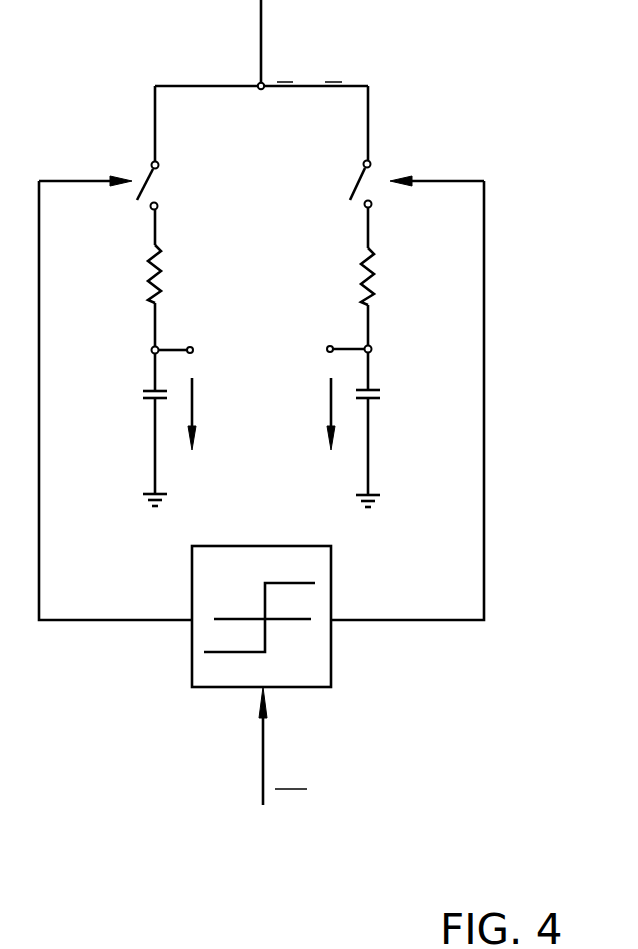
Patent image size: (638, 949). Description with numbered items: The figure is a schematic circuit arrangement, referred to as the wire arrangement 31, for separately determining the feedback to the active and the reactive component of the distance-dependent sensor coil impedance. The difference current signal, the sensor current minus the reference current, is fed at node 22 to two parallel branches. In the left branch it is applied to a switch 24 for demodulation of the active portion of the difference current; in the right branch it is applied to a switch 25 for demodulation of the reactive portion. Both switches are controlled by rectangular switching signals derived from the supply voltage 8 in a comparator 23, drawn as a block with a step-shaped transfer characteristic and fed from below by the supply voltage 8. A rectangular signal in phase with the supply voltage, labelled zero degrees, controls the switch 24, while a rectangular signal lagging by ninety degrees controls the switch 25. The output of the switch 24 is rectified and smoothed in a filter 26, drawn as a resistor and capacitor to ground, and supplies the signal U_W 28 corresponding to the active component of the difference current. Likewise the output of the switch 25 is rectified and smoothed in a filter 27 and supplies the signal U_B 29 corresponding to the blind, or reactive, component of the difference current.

The difference current input node 22 is at (333, 56).
The comparator 23 is at (333, 640).
The switch 24 is at (148, 174).
The switch 25 is at (372, 164).
The filter 26 is at (149, 275).
The filter 27 is at (399, 257).
The signal U_W 28 is at (215, 389).
The signal U_B 29 is at (305, 390).
The wire arrangement 31 is at (91, 623).
The supply voltage 8 is at (311, 778).